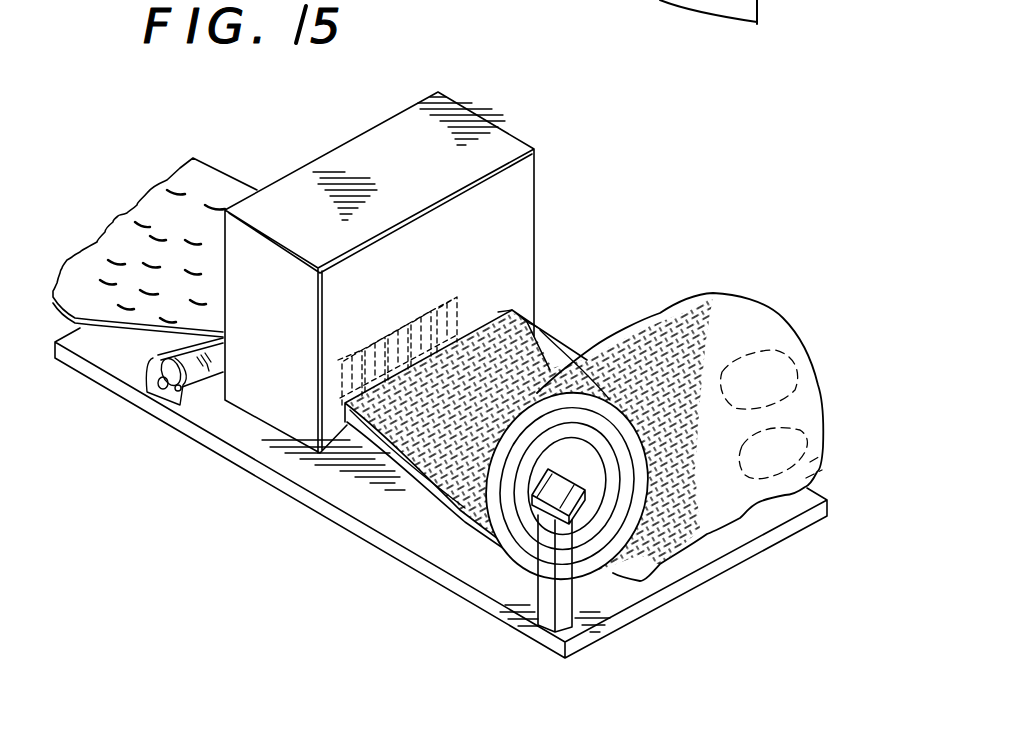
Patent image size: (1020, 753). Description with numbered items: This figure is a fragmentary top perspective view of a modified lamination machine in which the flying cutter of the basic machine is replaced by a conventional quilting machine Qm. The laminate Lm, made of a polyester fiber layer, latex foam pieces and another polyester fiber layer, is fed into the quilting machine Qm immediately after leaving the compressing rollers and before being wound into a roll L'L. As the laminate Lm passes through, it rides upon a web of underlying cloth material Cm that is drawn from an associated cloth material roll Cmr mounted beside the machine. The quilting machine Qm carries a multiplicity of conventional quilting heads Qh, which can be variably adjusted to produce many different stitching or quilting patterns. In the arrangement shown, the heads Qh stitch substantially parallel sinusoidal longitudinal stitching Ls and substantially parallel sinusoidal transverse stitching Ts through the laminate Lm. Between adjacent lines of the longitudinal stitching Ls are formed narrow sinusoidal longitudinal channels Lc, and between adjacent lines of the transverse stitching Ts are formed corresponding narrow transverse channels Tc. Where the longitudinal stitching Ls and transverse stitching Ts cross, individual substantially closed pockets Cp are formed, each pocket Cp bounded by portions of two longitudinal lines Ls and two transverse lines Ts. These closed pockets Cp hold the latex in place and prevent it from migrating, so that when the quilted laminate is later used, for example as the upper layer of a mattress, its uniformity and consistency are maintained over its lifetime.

The laminate Lm is at (215, 187).
The quilting machine Qm is at (536, 208).
The quilting heads Qh is at (470, 262).
The cloth material Cm is at (217, 356).
The cloth material roll Cmr is at (201, 379).
The transverse stitching Ts is at (723, 360).
The transverse channels Tc is at (681, 278).
The closed pockets Cp is at (512, 395).
The longitudinal stitching Ls is at (708, 462).
The longitudinal channels Lc is at (753, 593).
The wound roll L'L is at (698, 437).